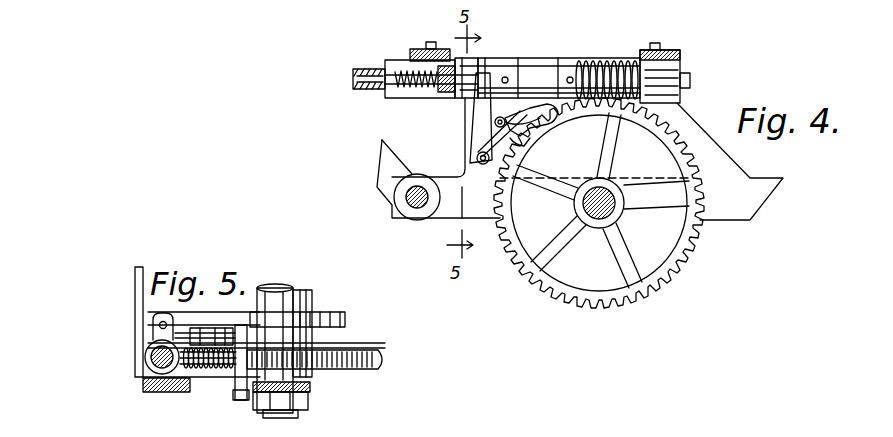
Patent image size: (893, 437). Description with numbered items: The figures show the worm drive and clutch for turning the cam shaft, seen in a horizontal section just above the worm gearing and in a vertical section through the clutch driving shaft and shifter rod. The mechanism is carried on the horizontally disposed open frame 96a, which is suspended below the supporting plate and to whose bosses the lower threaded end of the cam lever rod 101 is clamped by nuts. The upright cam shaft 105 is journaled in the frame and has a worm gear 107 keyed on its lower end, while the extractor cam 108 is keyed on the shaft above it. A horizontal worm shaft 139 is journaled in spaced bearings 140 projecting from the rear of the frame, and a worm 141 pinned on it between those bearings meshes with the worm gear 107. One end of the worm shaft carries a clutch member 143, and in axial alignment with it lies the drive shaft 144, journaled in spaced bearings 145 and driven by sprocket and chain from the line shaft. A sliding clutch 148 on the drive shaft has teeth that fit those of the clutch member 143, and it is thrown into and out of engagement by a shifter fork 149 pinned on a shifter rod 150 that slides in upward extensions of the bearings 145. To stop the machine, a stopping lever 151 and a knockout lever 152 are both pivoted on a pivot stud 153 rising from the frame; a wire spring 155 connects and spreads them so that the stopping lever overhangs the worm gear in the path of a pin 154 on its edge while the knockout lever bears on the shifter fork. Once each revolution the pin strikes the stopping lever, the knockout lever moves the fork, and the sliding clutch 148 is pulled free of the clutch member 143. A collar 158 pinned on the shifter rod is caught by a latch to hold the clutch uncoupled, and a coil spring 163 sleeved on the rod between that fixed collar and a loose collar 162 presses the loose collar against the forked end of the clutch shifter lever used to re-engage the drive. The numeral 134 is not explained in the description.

In FIG. 4, the cam lever rod 101 is at (410, 203).
In FIG. 4, the horizontally disposed open frame 96a is at (560, 210).
In FIG. 5, the horizontally disposed open frame 96a is at (312, 388).
In FIG. 4, the cam shaft 105 is at (622, 216).
In FIG. 5, the cam shaft 105 is at (300, 416).
In FIG. 4, the worm gear 107 is at (593, 292).
In FIG. 5, the worm gear 107 is at (387, 359).
In FIG. 5, the extractor cam 108 is at (346, 320).
In FIG. 5, the rod 134 is at (188, 371).
In FIG. 4, the worm shaft 139 is at (690, 82).
In FIG. 4, the worm shaft bearing 140 is at (518, 62).
In FIG. 4, the worm 141 is at (583, 64).
In FIG. 4, the clutch member 143 is at (505, 60).
In FIG. 5, the drive shaft 144 is at (160, 375).
In FIG. 4, the drive shaft bearing 145 is at (440, 94).
In FIG. 4, the sliding clutch 148 is at (483, 60).
In FIG. 5, the sliding clutch 148 is at (143, 385).
In FIG. 4, the shifter fork 149 is at (478, 122).
In FIG. 5, the shifter fork 149 is at (147, 346).
In FIG. 4, the shifter rod 150 is at (372, 88).
In FIG. 5, the shifter rod 150 is at (153, 318).
In FIG. 4, the stopping lever 151 is at (512, 128).
In FIG. 5, the stopping lever 151 is at (207, 371).
In FIG. 4, the knockout lever 152 is at (466, 150).
In FIG. 5, the knockout lever 152 is at (185, 327).
In FIG. 4, the pivot stud 153 is at (483, 166).
In FIG. 4, the pin 154 is at (552, 121).
In FIG. 4, the wire spring 155 is at (518, 144).
In FIG. 4, the collar 158 is at (427, 94).
In FIG. 4, the loose collar 162 is at (385, 100).
In FIG. 4, the coil spring 163 is at (390, 90).